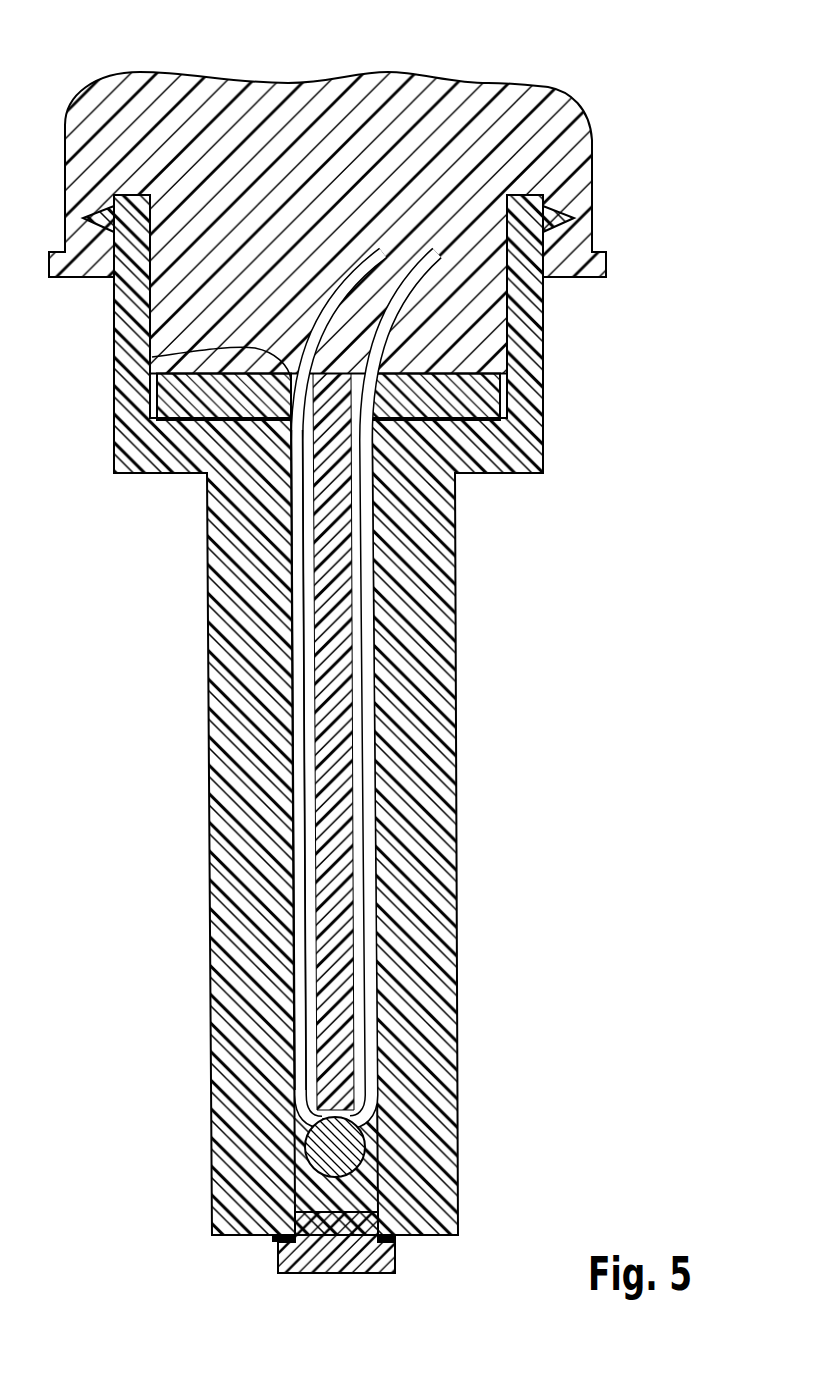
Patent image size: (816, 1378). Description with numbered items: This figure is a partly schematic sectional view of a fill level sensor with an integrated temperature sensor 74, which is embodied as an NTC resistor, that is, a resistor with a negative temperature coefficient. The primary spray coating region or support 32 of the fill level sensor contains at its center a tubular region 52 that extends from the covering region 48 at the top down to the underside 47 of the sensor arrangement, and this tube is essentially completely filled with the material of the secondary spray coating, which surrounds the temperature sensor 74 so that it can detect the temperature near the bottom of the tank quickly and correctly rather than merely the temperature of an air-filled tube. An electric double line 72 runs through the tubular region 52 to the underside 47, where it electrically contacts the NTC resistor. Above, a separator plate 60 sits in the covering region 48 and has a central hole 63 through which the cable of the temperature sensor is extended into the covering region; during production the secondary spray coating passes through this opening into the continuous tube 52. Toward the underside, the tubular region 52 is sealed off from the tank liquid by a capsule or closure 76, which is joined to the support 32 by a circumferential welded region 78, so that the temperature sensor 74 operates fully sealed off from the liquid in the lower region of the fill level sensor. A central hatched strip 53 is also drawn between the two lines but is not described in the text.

The support 32 is at (443, 679).
The underside 47 is at (176, 1216).
The covering region 48 is at (422, 98).
The tubular region 52 is at (290, 705).
The insulation 53 is at (333, 790).
The separator plate 60 is at (490, 396).
The central hole 63 is at (197, 353).
The electric double line 72 is at (358, 985).
The temperature sensor 74 is at (348, 1143).
The closure 76 is at (397, 1258).
The welded region 78 is at (273, 1238).